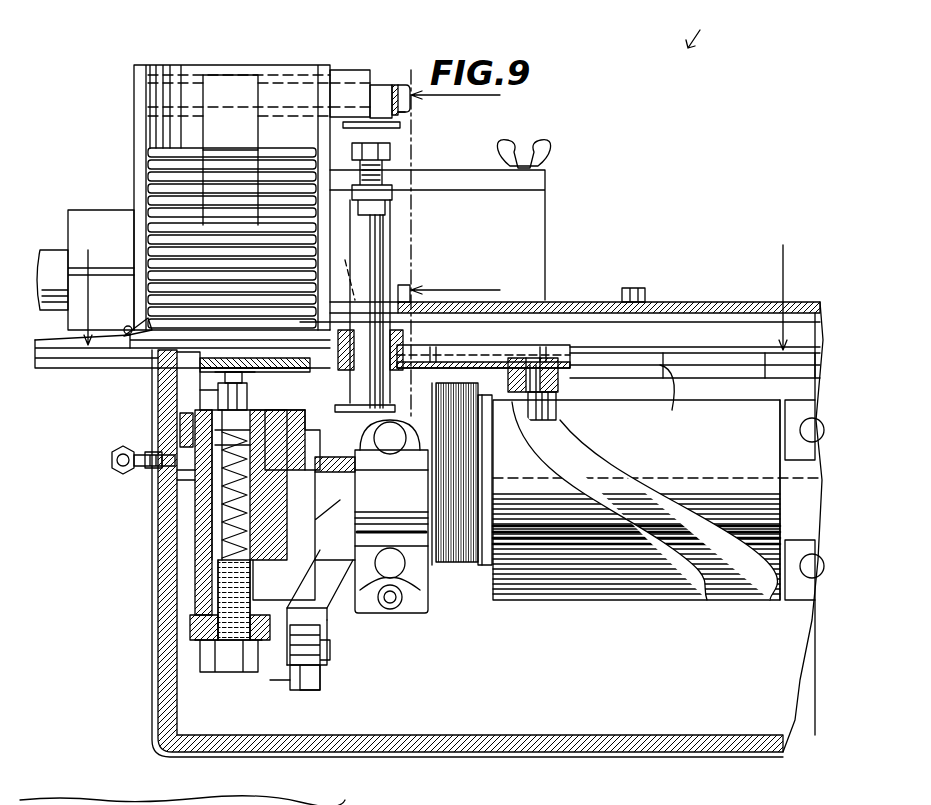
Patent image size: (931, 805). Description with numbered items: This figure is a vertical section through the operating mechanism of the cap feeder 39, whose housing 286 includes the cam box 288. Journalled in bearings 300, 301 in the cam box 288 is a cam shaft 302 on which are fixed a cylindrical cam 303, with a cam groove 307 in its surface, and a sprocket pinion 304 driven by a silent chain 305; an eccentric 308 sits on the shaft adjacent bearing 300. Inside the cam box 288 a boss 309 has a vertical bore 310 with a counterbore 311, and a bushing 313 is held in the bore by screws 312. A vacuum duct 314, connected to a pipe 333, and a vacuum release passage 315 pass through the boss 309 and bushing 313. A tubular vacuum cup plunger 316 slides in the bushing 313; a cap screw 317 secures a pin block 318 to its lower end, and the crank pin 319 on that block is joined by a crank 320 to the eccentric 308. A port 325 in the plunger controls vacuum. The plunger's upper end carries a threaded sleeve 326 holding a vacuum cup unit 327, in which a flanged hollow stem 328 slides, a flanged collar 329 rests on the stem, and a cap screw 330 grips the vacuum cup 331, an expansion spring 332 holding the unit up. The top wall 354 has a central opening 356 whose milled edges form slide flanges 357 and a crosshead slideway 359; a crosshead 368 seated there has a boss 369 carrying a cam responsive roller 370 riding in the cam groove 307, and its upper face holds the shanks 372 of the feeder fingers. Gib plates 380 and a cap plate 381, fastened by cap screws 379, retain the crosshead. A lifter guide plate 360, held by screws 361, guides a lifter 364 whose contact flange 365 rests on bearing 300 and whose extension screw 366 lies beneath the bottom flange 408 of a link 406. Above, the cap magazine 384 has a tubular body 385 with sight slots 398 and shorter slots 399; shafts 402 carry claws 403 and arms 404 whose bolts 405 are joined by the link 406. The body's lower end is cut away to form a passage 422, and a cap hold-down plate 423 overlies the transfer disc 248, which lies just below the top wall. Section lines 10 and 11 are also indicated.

The cap feeder 39 is at (701, 27).
The tubular body 385 is at (134, 88).
The cap magazine 384 is at (116, 142).
The sight slots 398 is at (140, 183).
The claw 403 is at (230, 150).
The shorter slots 399 is at (262, 133).
The shafts 402 is at (365, 95).
The arm 404 is at (380, 88).
The link 406 is at (412, 72).
The bottom flange 408 is at (366, 136).
The bolts 405 is at (398, 128).
The section line 10 is at (455, 245).
The extension screw 366 is at (392, 152).
The lifter 364 is at (382, 255).
The screws 361 is at (341, 280).
The contact flange 365 is at (340, 416).
The cap screws 379 is at (410, 288).
The cap plate 381 is at (592, 302).
The shanks 372 is at (485, 345).
The crosshead 368 is at (525, 345).
The lifter guide plate 360 is at (405, 340).
The top wall 354 is at (690, 347).
The crosshead slideway 359 is at (690, 347).
The gib plates 380 is at (670, 338).
The slide flanges 357 is at (679, 399).
The section line 11 is at (434, 297).
The passage 422 is at (172, 325).
The cap hold-down plate 423 is at (48, 340).
The disc 248 is at (70, 370).
The central opening 356 is at (150, 362).
The cam box 288 is at (605, 752).
The housing 286 is at (734, 772).
The vacuum cup unit 327 is at (177, 365).
The vacuum cup 331 is at (256, 362).
The cap screw 330 is at (228, 356).
The flanged collar 329 is at (243, 378).
The flanged hollow stem 328 is at (247, 400).
The threaded sleeve 326 is at (218, 408).
The counterbore 311 is at (300, 408).
The vertical bore 310 is at (262, 495).
The screws 312 is at (180, 424).
The bushing 313 is at (200, 535).
The vacuum duct 314 is at (165, 455).
The pipe 333 is at (110, 461).
The port 325 is at (215, 492).
The vacuum release passage 315 is at (185, 500).
The expansion spring 332 is at (222, 568).
The vacuum cup plunger 316 is at (218, 590).
The cap screw 317 is at (232, 672).
The boss 309 is at (290, 612).
The crank 320 is at (352, 598).
The crank pin 319 is at (330, 640).
The pin block 318 is at (270, 680).
The cam shaft 302 is at (372, 475).
The eccentric 308 is at (315, 505).
The bearing 300 is at (457, 489).
The silent chain 305 is at (460, 548).
The sprocket pinion 304 is at (485, 560).
The boss 369 is at (560, 390).
The cam responsive roller 370 is at (556, 408).
The cylindrical cam 303 is at (608, 600).
The cam groove 307 is at (600, 470).
The bearing 301 is at (785, 595).